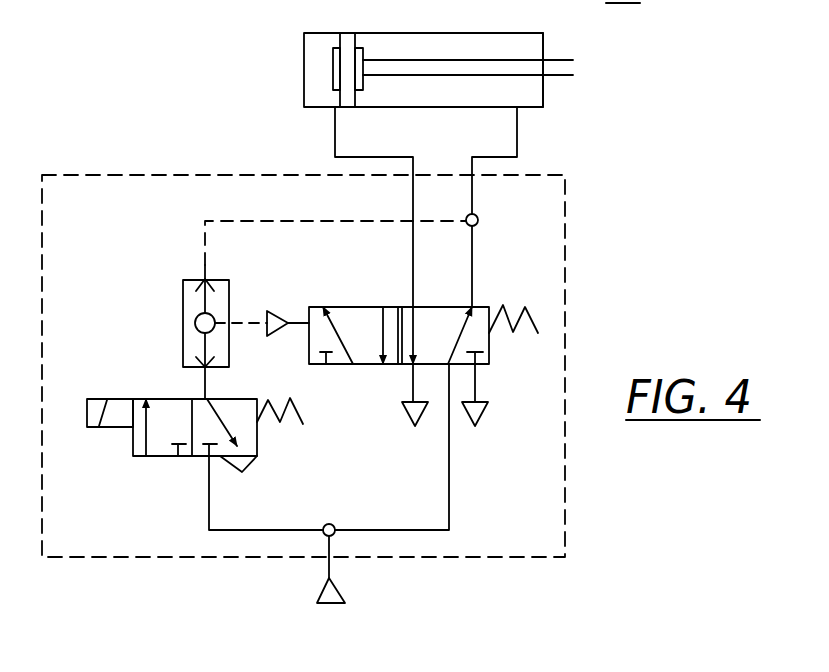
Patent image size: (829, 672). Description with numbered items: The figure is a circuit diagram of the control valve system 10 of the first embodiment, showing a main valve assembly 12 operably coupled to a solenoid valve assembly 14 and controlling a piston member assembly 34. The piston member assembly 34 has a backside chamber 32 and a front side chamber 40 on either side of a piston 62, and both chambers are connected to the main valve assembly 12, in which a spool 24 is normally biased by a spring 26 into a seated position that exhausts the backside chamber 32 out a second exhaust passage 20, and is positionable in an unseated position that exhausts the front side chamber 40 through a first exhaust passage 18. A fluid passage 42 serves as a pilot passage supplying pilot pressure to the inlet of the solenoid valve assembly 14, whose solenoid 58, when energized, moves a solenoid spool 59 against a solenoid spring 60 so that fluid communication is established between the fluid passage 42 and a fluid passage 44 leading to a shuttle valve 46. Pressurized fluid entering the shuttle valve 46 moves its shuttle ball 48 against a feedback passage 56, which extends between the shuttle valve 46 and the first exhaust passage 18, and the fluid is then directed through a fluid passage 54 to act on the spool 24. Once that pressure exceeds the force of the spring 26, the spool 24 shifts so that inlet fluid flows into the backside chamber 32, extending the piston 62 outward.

The control valve system 10 is at (182, 80).
The main valve assembly 12 is at (568, 200).
The solenoid valve assembly 14 is at (163, 458).
The first exhaust passage 18 is at (478, 386).
The second exhaust passage 20 is at (413, 389).
The spool 24 is at (365, 307).
The spring 26 is at (503, 305).
The backside chamber 32 is at (315, 82).
The piston member assembly 34 is at (371, 28).
The front side chamber 40 is at (536, 91).
The fluid passage 42 is at (210, 504).
The fluid passage 44 is at (203, 380).
The shuttle valve 46 is at (182, 300).
The shuttle ball 48 is at (213, 316).
The fluid passage 54 is at (298, 318).
The feedback passage 56 is at (338, 218).
The solenoid 58 is at (98, 397).
The solenoid spool 59 is at (140, 398).
The solenoid spring 60 is at (306, 392).
The piston 62 is at (470, 66).